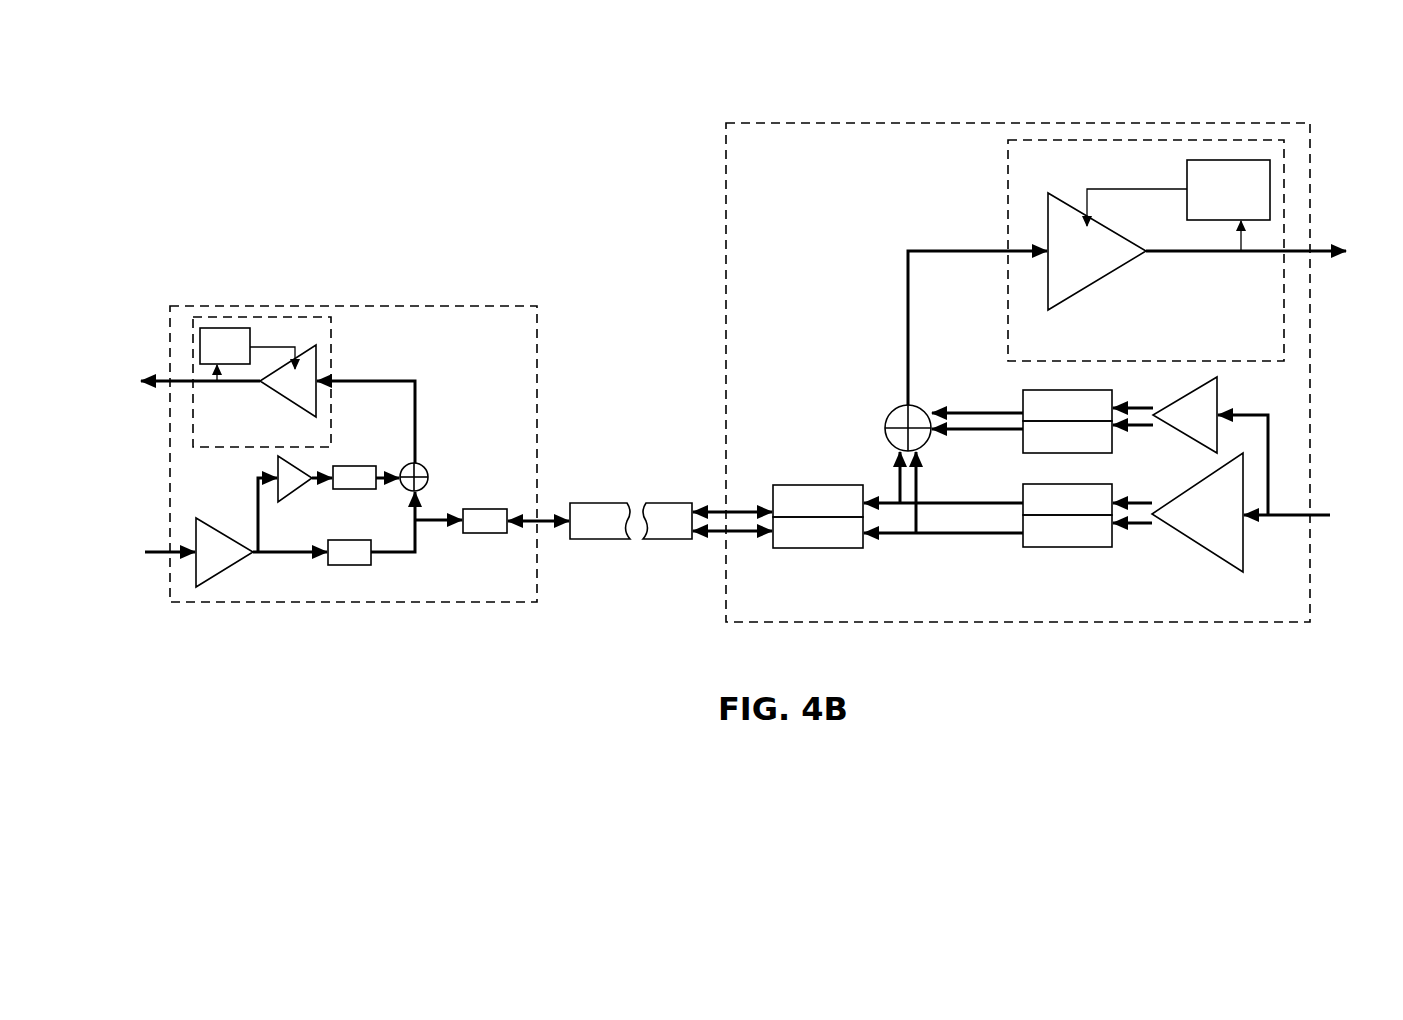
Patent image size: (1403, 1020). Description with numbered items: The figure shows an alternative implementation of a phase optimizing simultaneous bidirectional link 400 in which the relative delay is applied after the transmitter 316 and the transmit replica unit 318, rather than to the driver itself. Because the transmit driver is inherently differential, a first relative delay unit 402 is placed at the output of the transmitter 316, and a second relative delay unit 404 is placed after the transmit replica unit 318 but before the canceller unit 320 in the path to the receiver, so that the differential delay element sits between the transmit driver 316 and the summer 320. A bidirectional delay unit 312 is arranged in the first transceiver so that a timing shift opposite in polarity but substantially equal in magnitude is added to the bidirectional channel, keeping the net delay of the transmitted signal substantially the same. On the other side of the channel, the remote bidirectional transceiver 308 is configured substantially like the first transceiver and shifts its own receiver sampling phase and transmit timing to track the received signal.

The remote bidirectional transceiver 308 is at (355, 454).
The phase optimizing simultaneous bidirectional link 400 is at (1056, 335).
The second relative delay unit 404 is at (1040, 453).
The canceller unit 320 is at (891, 412).
The transmit replica unit 318 is at (1202, 438).
The transmitter 316 is at (1213, 548).
The first relative delay unit 402 is at (1070, 551).
The bidirectional delay unit 312 is at (835, 482).